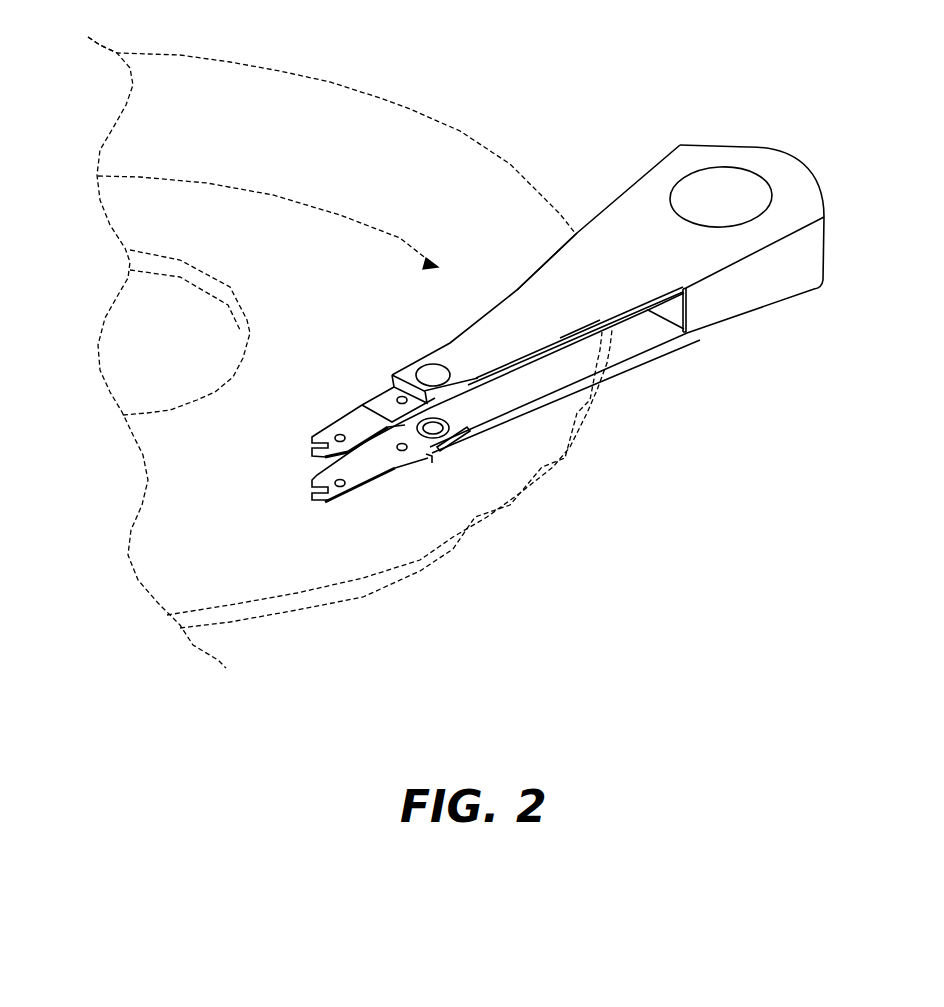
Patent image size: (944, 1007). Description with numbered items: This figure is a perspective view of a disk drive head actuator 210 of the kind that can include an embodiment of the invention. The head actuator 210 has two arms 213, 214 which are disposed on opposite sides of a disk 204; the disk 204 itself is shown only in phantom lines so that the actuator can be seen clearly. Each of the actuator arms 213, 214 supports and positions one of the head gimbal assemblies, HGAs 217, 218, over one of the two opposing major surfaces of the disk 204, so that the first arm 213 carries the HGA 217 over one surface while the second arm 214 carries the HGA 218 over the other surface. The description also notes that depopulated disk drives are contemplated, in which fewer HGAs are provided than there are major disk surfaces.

The disk 204 is at (383, 137).
The disk drive head actuator 210 is at (653, 187).
The actuator arm 213 is at (517, 313).
The actuator arm 214 is at (540, 376).
The HGA 217 is at (355, 408).
The HGA 218 is at (405, 462).